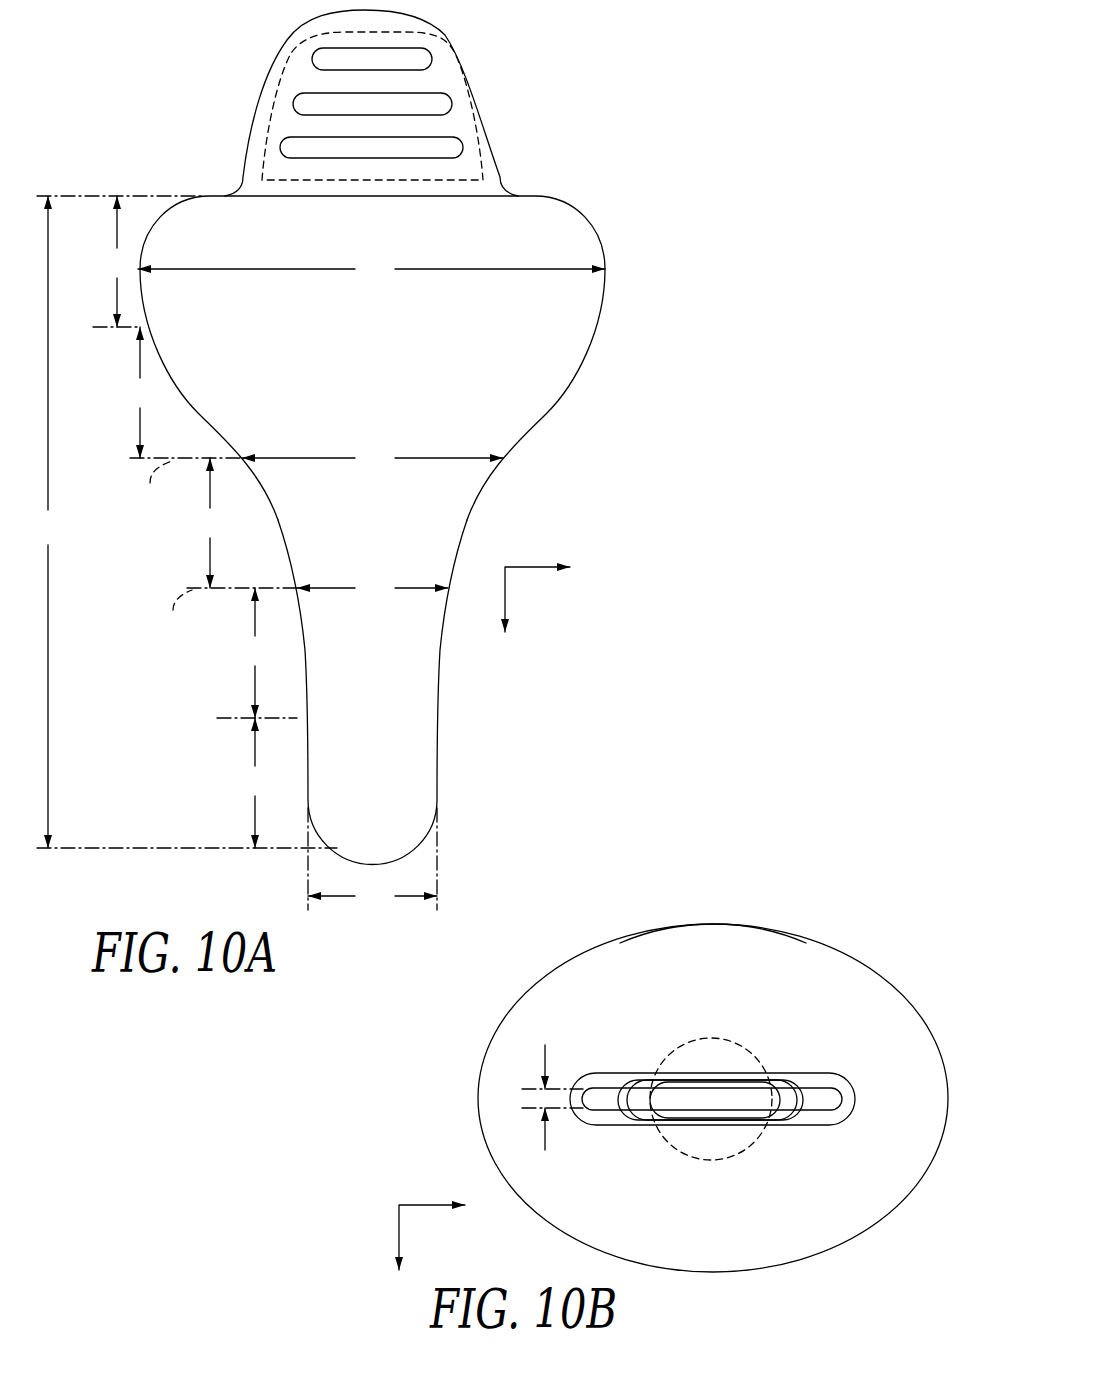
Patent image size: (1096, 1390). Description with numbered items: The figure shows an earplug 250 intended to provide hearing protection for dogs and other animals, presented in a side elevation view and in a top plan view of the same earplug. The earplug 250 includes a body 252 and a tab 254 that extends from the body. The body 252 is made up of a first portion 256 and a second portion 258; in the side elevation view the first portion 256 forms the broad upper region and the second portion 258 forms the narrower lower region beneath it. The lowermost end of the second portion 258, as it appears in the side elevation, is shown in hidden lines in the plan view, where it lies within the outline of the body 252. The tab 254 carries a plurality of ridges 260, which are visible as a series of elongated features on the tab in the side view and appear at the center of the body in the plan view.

In FIG. 10A, the earplug 250 is at (800, 131).
In FIG. 10B, the earplug 250 is at (853, 846).
In FIG. 10A, the body 252 is at (610, 205).
In FIG. 10B, the body 252 is at (876, 945).
In FIG. 10A, the tab 254 is at (265, 79).
In FIG. 10B, the tab 254 is at (822, 1086).
In FIG. 10A, the first portion 256 is at (603, 302).
In FIG. 10B, the first portion 256 is at (727, 925).
In FIG. 10A, the second portion 258 is at (438, 734).
In FIG. 10B, the second portion 258 is at (700, 1037).
In FIG. 10A, the ridges 260 is at (433, 59).
In FIG. 10B, the ridges 260 is at (770, 1119).